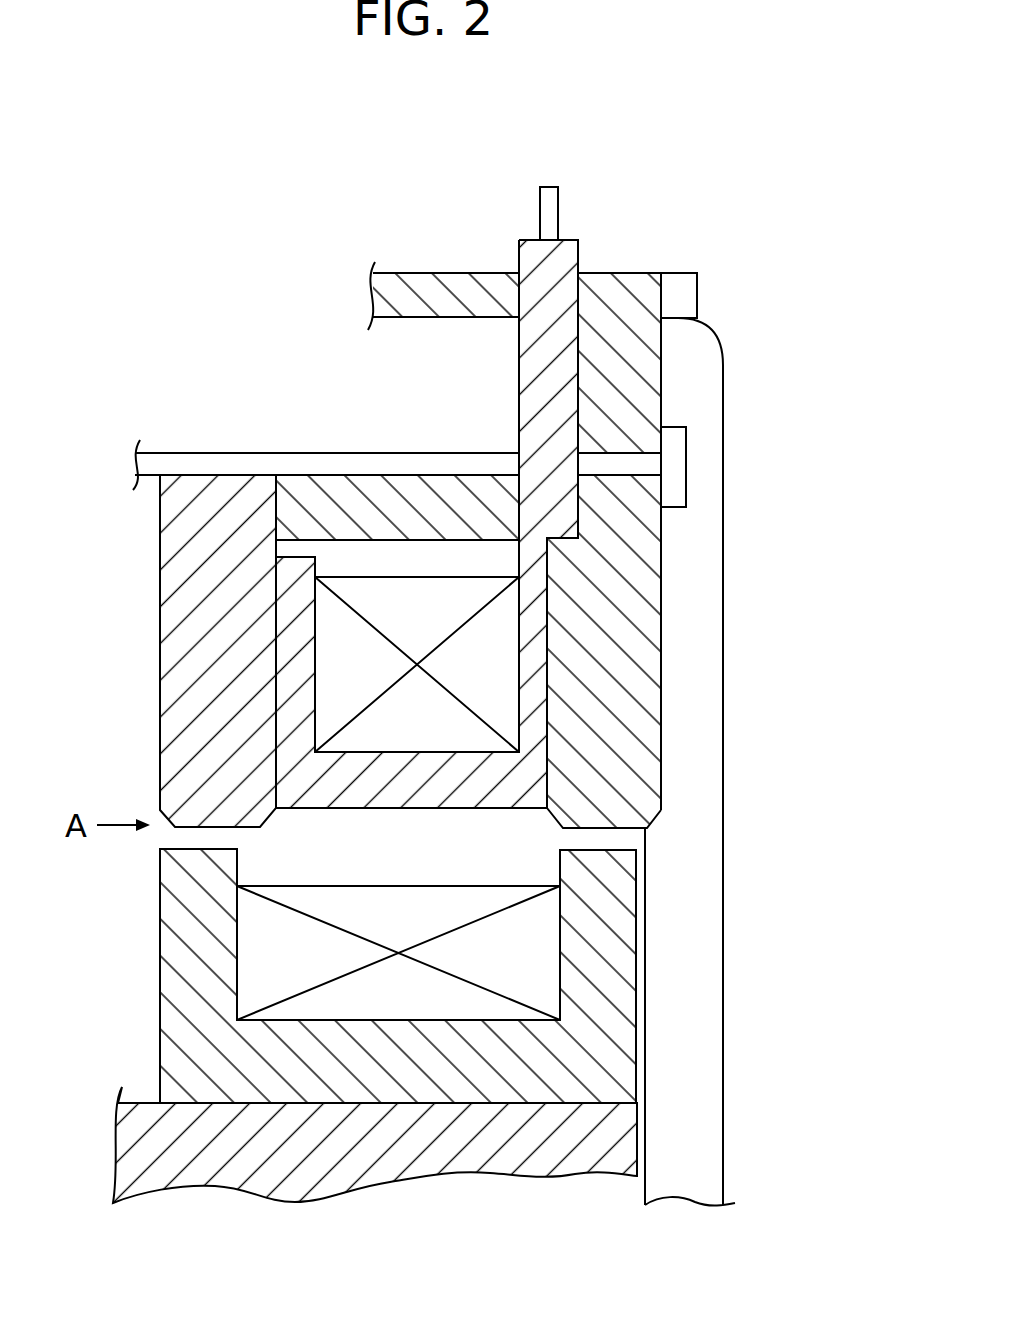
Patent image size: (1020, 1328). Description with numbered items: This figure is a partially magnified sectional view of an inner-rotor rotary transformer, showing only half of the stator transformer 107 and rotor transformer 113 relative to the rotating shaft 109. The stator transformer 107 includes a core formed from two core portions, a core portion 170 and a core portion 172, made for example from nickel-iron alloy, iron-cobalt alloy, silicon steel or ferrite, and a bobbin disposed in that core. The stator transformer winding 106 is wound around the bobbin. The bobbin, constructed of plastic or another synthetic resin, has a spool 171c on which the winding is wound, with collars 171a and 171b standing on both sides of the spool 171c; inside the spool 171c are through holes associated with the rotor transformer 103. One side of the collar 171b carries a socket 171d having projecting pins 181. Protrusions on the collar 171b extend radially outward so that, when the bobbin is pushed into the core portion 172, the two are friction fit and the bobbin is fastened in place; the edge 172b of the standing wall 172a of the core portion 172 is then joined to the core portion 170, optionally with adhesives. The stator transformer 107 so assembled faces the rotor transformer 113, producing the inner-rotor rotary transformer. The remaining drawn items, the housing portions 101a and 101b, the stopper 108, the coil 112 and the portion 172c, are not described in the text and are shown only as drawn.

The housing upper wall 101a is at (637, 290).
The housing side wall 101b is at (707, 365).
The rotor transformer 103 is at (637, 1072).
The stator transformer winding 106 is at (383, 600).
The stator transformer 107 is at (378, 423).
The stopper 108 is at (673, 455).
The rotating shaft 109 is at (588, 1152).
The coil 112 is at (522, 949).
The rotor transformer 113 is at (617, 990).
The core portion 170 is at (192, 498).
The collar 171a is at (302, 622).
The collar 171b is at (532, 635).
The spool 171c is at (457, 745).
The socket 171d is at (561, 264).
The core portion 172 is at (633, 682).
The standing wall 172a is at (463, 505).
The edge 172b is at (281, 520).
The outer yoke upper portion 172c is at (630, 556).
The projecting pins 181 is at (560, 207).